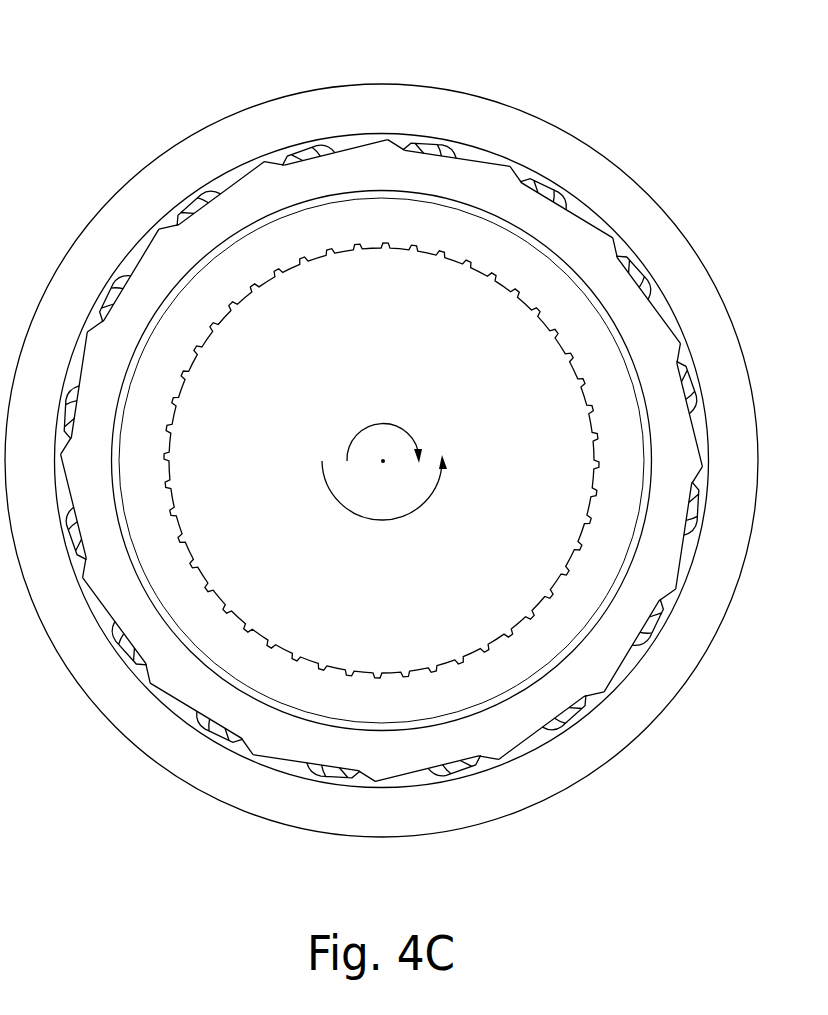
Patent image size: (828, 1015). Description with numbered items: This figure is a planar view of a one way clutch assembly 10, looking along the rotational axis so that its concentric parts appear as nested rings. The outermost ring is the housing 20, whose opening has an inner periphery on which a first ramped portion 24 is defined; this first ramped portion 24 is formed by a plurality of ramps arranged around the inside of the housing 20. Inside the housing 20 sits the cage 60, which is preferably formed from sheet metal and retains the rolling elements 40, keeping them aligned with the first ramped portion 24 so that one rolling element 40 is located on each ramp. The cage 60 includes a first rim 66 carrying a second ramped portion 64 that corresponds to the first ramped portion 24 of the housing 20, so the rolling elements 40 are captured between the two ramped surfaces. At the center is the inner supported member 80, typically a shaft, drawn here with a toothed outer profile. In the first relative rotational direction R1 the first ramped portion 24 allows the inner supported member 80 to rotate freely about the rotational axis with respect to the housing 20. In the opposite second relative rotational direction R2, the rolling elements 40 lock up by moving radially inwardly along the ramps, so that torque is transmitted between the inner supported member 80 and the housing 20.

The one way clutch assembly 10 is at (600, 101).
The housing 20 is at (652, 728).
The first ramped portion 24 is at (312, 146).
The rolling elements 40 is at (306, 150).
The cage 60 is at (284, 737).
The second ramped portion 64 is at (470, 150).
The first rim 66 is at (363, 148).
The inner supported member 80 is at (493, 681).
The first relative rotational direction R1 is at (384, 430).
The second relative rotational direction R2 is at (384, 506).